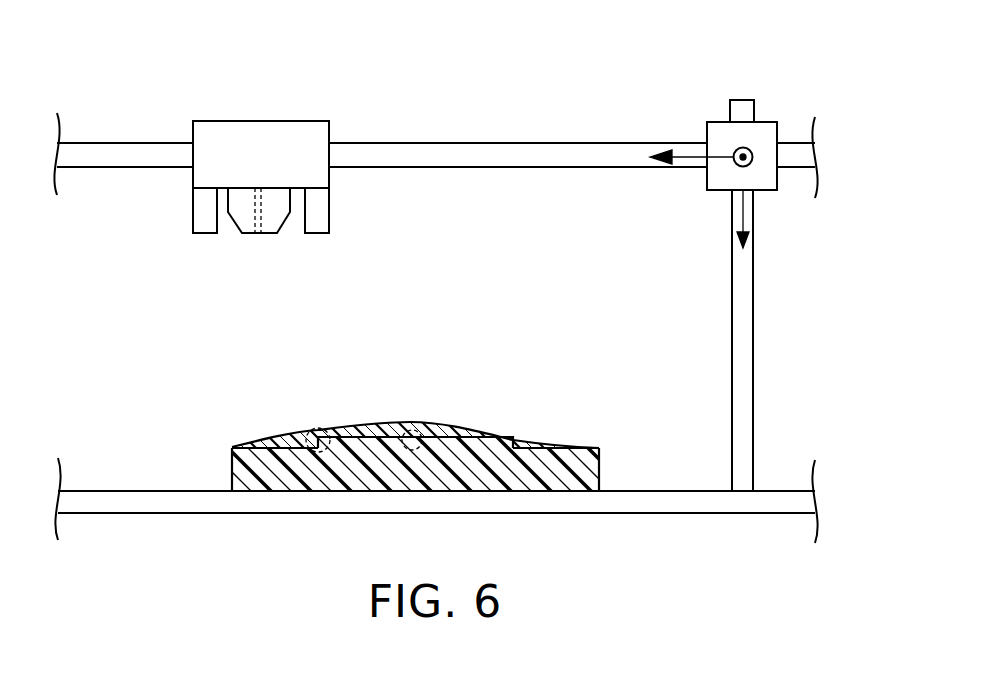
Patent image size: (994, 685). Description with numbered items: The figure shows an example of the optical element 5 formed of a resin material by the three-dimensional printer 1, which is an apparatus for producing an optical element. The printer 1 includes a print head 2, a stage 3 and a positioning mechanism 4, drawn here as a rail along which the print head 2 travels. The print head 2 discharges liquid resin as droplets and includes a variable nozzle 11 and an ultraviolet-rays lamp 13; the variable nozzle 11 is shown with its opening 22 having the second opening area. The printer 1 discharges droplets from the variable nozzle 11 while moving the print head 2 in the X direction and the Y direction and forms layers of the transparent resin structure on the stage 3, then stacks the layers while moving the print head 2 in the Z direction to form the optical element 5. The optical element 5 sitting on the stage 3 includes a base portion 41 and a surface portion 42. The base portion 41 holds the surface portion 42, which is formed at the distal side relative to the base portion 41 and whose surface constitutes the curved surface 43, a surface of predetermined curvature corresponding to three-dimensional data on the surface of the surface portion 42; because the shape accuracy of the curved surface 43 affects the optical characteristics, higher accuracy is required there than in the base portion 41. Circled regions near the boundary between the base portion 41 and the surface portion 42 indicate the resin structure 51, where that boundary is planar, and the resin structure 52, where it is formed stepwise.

The 3D printer 1 is at (677, 57).
The print head 2 is at (300, 121).
The stage 3 is at (690, 491).
The positioning mechanism 4 is at (620, 143).
The optical element 5 is at (590, 367).
The variable nozzle 11 is at (275, 222).
The ultraviolet-rays lamp 13 is at (193, 218).
The opening 22 is at (258, 234).
The base portion 41 is at (592, 465).
The surface portion 42 is at (527, 438).
The curved surface 43 is at (478, 424).
The resin structure 51 is at (418, 430).
The resin structure 52 is at (312, 428).
The X direction X is at (683, 160).
The Y direction Y is at (749, 149).
The Z direction Z is at (755, 206).